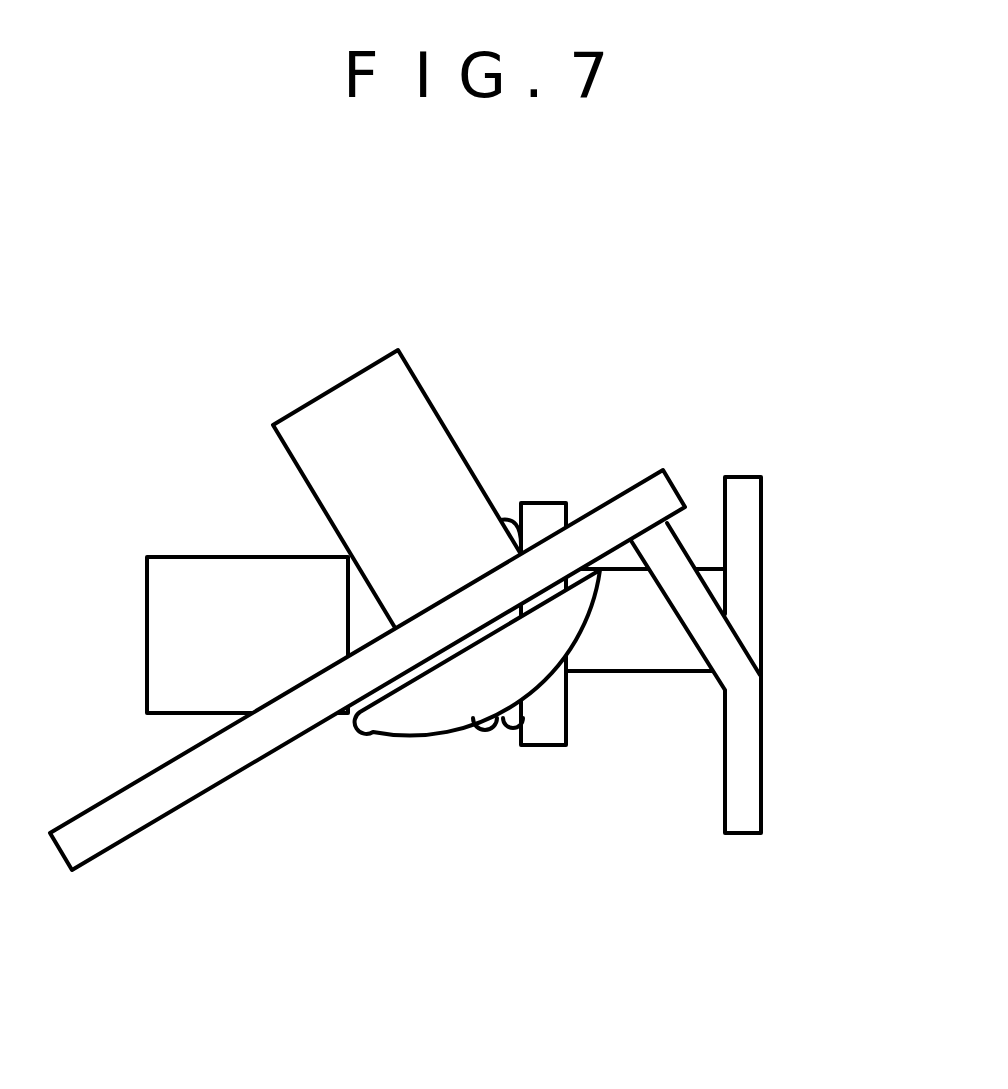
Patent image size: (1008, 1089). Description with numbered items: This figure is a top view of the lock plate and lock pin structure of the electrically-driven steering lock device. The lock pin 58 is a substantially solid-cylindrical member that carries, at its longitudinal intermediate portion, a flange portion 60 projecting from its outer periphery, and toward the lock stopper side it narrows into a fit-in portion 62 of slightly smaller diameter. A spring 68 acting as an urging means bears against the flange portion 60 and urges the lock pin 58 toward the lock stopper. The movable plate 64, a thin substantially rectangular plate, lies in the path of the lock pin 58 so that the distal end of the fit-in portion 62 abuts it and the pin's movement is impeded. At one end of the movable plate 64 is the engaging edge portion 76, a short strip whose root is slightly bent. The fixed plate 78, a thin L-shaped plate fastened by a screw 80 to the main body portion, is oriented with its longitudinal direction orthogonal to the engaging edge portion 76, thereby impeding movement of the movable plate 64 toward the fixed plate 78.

The lock pin 58 is at (200, 552).
The flange portion 60 is at (548, 742).
The fit-in portion 62 is at (663, 657).
The movable plate 64 is at (767, 788).
The spring 68 is at (508, 733).
The engaging edge portion 76 is at (681, 566).
The fixed plate 78 is at (183, 803).
The screw 80 is at (438, 411).